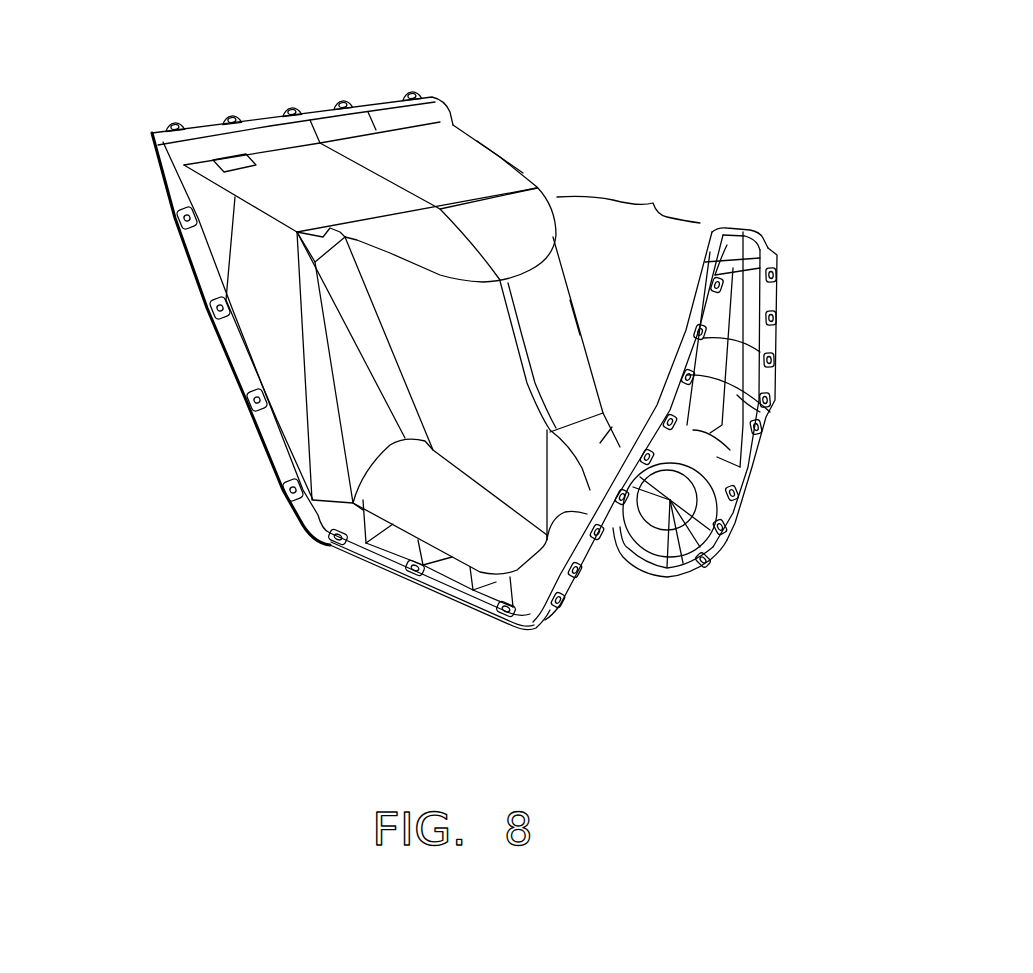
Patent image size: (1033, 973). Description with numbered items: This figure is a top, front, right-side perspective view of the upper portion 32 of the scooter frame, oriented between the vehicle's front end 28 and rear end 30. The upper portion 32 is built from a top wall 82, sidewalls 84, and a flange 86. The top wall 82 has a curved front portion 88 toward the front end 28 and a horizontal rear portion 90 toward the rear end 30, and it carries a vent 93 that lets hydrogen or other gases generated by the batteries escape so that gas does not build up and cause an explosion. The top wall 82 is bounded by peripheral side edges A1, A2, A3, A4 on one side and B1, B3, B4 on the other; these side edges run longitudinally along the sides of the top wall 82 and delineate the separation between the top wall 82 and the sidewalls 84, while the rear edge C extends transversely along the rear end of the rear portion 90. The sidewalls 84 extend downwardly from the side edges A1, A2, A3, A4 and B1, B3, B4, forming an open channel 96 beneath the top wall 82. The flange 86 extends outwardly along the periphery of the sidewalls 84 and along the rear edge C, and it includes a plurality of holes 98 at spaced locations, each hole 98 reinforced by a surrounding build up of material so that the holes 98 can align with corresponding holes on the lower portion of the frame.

The front end 28 is at (823, 278).
The rear end 30 is at (132, 241).
The upper portion 32 is at (603, 140).
The top wall 82 is at (547, 310).
The sidewalls 84 is at (270, 336).
The flange 86 is at (373, 552).
The curved front portion 88 is at (628, 188).
The horizontal rear portion 90 is at (438, 203).
The vent 93 is at (254, 156).
The open channel 96 is at (614, 566).
The holes 98 is at (230, 120).
The side edge A1 is at (655, 402).
The side edge A2 is at (500, 505).
The side edge A3 is at (400, 377).
The side edge A4 is at (284, 221).
The side edge B1 is at (747, 374).
The side edge B3 is at (582, 349).
The side edge B4 is at (501, 157).
The rear edge C is at (373, 126).